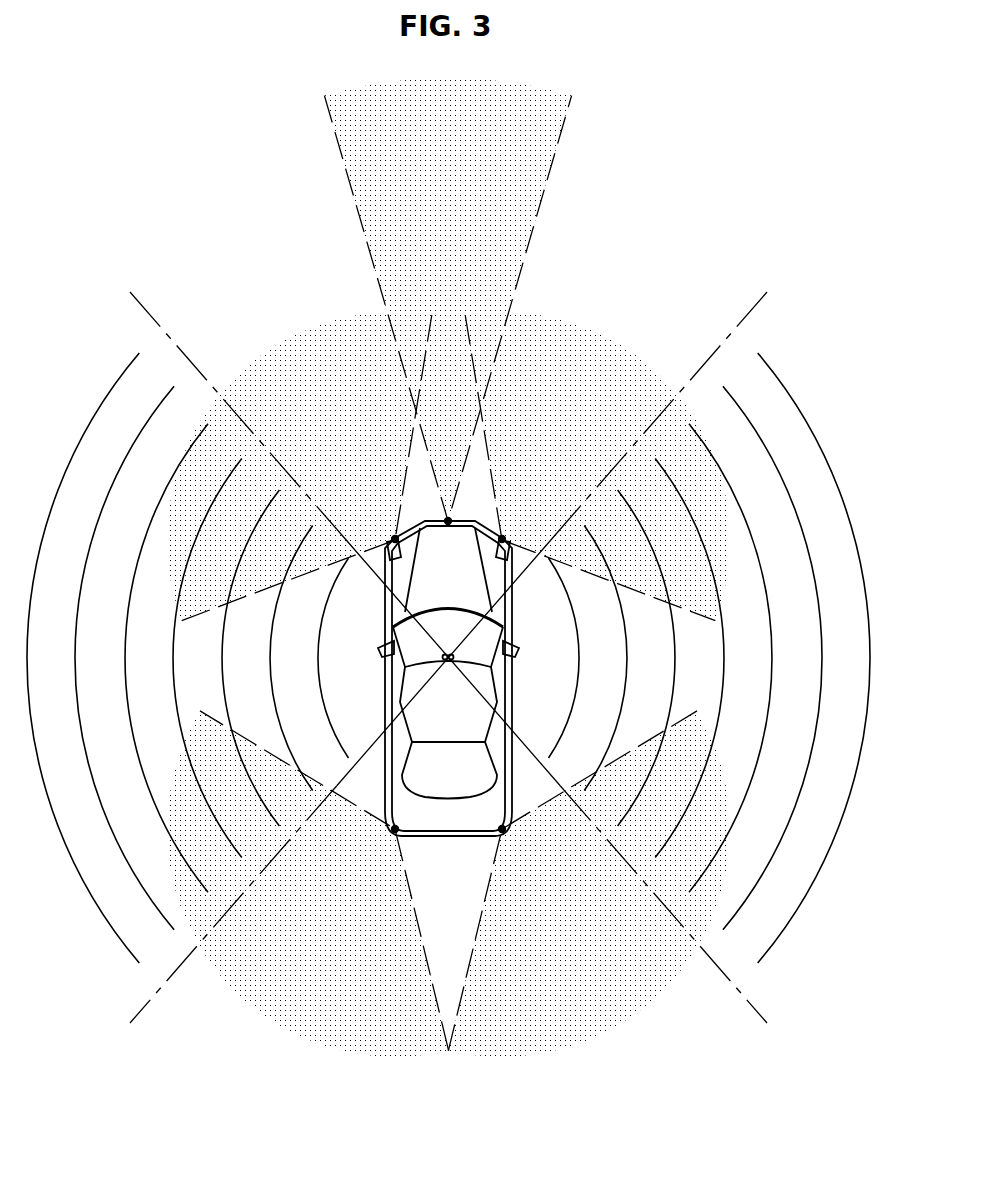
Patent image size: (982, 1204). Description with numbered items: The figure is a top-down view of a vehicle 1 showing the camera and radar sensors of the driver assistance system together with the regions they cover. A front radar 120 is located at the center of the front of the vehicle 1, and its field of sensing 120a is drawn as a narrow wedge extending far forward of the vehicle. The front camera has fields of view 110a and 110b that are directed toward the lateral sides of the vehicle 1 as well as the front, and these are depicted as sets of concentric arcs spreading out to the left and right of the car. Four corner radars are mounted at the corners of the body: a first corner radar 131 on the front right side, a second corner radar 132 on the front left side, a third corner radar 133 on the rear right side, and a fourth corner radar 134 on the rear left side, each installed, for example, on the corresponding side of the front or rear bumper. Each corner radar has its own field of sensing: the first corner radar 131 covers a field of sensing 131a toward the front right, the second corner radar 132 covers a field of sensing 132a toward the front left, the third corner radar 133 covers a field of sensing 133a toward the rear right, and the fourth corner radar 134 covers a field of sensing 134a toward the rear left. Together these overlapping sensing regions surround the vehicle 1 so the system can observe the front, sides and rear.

The vehicle 1 is at (503, 683).
The field of view 110a is at (121, 381).
The field of view 110b is at (776, 381).
The front radar 120 is at (449, 519).
The field of sensing 120a is at (527, 196).
The first corner radar 131 is at (502, 539).
The field of sensing 131a is at (622, 359).
The second corner radar 132 is at (396, 539).
The field of sensing 132a is at (273, 359).
The third corner radar 133 is at (505, 832).
The field of sensing 133a is at (622, 1007).
The fourth corner radar 134 is at (392, 832).
The field of sensing 134a is at (265, 983).